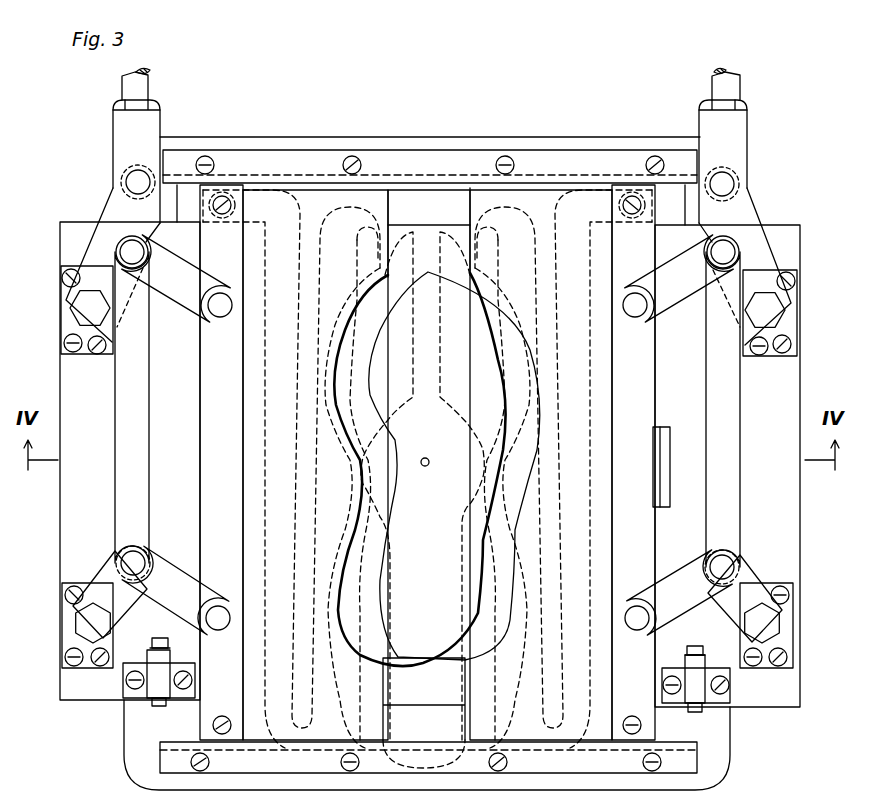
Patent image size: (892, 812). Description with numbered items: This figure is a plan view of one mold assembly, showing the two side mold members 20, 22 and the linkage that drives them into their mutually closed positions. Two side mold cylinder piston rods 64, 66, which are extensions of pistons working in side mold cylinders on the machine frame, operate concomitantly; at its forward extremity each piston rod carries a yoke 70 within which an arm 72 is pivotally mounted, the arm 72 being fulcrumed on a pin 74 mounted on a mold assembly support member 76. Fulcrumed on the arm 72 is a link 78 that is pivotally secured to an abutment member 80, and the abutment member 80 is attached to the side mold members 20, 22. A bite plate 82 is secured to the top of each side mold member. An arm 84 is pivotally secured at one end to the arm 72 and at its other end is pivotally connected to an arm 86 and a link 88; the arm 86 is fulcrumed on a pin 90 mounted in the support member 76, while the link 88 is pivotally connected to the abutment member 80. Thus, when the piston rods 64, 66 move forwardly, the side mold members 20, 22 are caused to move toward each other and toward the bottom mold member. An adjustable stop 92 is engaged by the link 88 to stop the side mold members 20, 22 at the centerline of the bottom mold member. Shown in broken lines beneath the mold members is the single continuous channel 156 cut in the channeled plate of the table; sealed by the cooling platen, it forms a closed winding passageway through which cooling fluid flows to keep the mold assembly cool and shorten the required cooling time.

The side mold member 20 is at (390, 188).
The side mold member 22 is at (470, 188).
The side mold cylinder piston rod 64 is at (149, 86).
The side mold cylinder piston rod 66 is at (712, 84).
The yoke 70 is at (118, 140).
The arm 72 is at (112, 206).
The pin 74 is at (80, 302).
The mold assembly support member 76 is at (795, 375).
The link 78 is at (179, 298).
The abutment member 80 is at (205, 400).
The bite plate 82 is at (306, 196).
The arm 84 is at (117, 435).
The arm 86 is at (106, 565).
The link 88 is at (168, 567).
The pin 90 is at (76, 613).
The adjustable stop 92 is at (152, 642).
The channel 156 is at (258, 200).